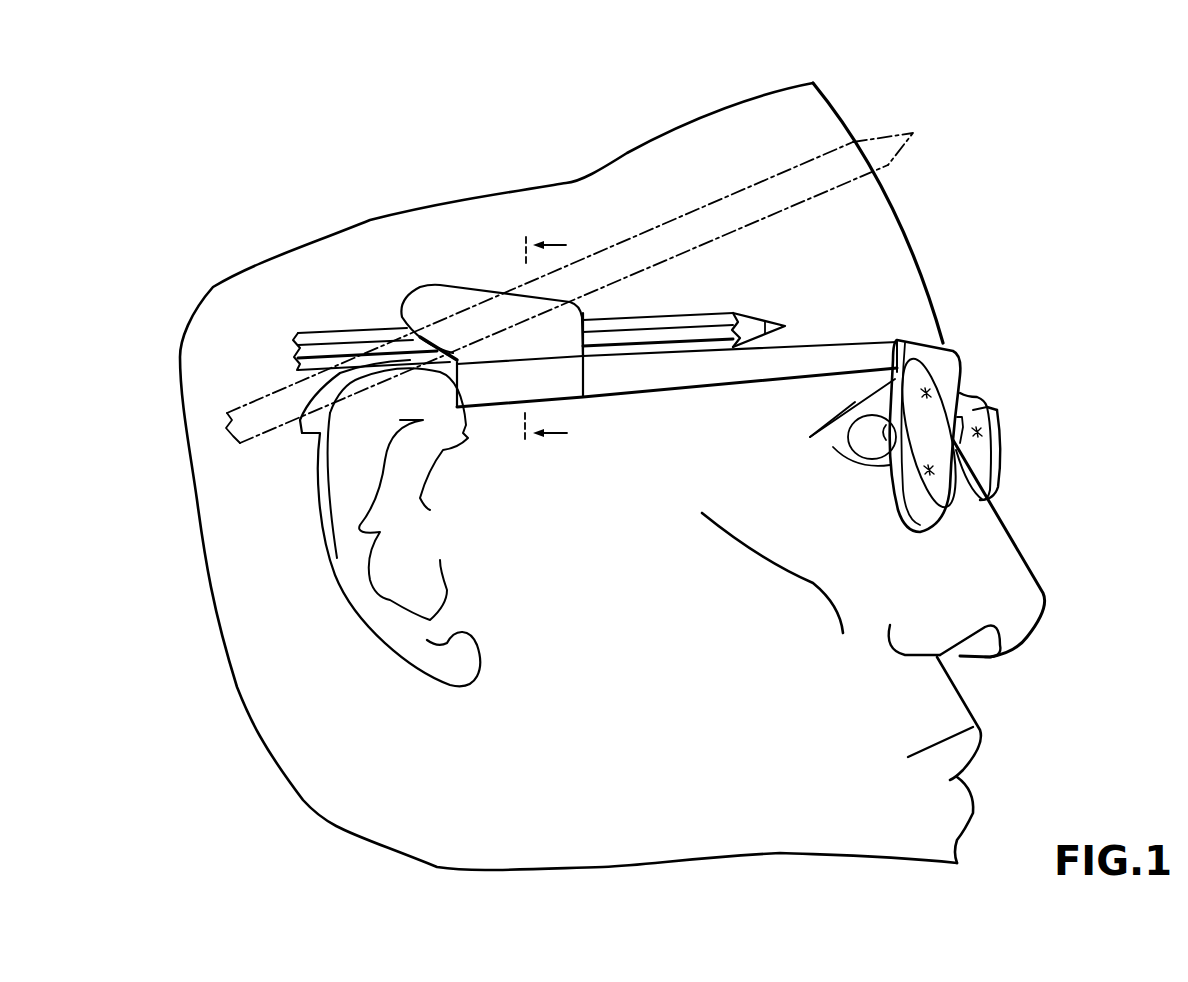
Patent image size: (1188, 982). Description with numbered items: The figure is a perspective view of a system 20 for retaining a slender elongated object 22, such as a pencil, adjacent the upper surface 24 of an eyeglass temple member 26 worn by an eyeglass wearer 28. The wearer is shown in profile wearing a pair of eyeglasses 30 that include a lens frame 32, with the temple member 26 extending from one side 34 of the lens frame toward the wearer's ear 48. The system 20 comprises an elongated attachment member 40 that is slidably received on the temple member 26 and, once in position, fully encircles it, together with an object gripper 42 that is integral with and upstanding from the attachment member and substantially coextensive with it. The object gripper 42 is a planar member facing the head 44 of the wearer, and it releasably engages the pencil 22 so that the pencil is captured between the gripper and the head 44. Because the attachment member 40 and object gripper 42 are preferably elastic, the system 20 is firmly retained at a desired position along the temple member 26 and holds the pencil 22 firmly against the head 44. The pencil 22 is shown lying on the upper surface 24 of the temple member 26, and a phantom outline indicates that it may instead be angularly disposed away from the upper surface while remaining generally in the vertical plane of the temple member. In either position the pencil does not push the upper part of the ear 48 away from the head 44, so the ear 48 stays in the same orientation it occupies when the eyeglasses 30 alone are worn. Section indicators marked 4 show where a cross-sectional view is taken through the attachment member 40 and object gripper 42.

The system 20 is at (662, 203).
The slender elongated object 22 is at (787, 170).
The upper surface 24 is at (837, 344).
The eyeglass temple member 26 is at (686, 396).
The eyeglass wearer 28 is at (936, 243).
The eyeglasses 30 is at (977, 371).
The lens frame 32 is at (973, 401).
The side of lens frame 34 is at (897, 380).
The elongated attachment member 40 is at (553, 387).
The object gripper 42 is at (433, 303).
The head 44 is at (874, 204).
The ear 48 is at (350, 490).
The section line 4- 4 is at (534, 342).